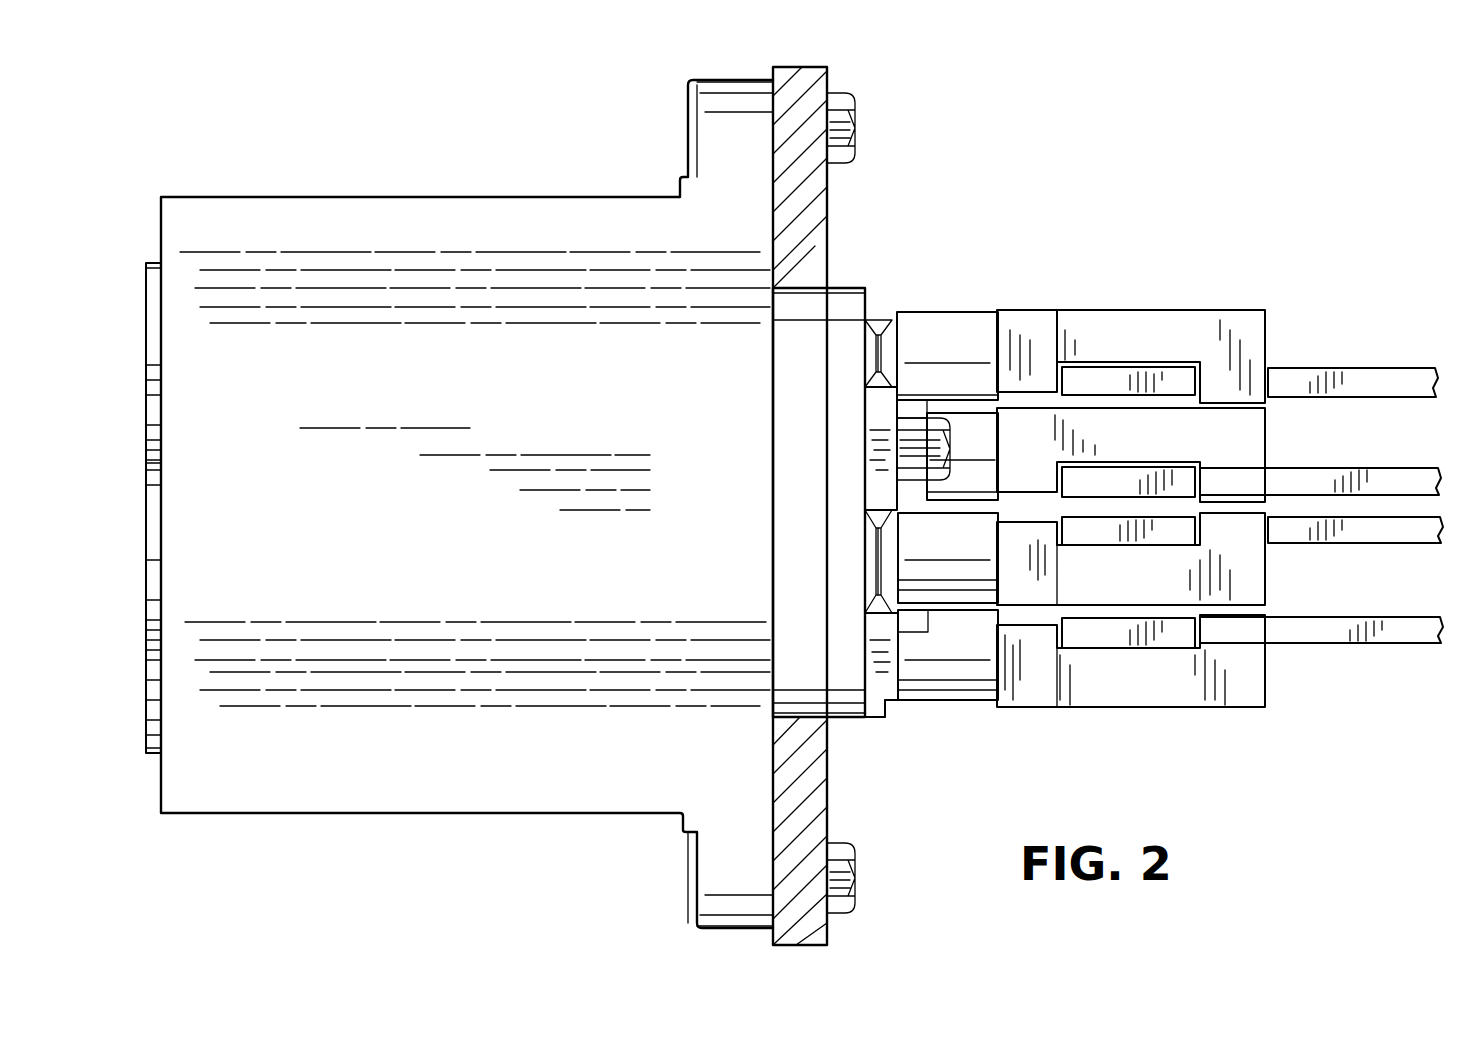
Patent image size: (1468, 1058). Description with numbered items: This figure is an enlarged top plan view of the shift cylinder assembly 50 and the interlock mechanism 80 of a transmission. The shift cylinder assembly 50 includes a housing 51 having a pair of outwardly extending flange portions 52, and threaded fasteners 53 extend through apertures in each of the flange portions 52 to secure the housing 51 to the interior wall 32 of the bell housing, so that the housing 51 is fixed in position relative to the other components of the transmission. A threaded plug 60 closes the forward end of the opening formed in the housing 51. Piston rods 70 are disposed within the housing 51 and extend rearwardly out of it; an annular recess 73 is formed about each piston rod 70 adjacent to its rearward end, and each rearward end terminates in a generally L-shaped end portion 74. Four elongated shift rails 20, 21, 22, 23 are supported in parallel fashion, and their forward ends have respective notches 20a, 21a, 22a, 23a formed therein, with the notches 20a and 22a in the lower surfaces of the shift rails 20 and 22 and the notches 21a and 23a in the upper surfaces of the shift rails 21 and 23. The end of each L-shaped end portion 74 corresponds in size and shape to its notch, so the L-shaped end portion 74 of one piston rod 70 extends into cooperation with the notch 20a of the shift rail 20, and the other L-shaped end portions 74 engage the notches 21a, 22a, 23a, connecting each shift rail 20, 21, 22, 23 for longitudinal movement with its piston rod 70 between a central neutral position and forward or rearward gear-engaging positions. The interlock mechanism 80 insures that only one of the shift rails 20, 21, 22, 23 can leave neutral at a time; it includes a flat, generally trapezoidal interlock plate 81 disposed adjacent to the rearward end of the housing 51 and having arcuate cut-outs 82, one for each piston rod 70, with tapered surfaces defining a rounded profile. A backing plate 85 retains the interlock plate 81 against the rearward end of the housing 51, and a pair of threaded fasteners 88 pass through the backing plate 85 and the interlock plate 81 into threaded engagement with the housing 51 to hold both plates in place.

The shift cylinder assembly 50 is at (397, 168).
The housing 51 is at (406, 797).
The flange portions 52 is at (705, 122).
The threaded fasteners 53 is at (860, 130).
The interior wall 32 is at (822, 190).
The threaded plug 60 is at (152, 690).
The piston rod 70 is at (975, 312).
The annular recess 73 is at (880, 320).
The L-shaped end portion 74 is at (1120, 350).
The interlock mechanism 80 is at (887, 724).
The interlock plate 81 is at (880, 462).
The arcuate cut-outs 82 is at (865, 520).
The backing plate 85 is at (910, 422).
The threaded fasteners 88 is at (945, 457).
The shift rail 20 is at (1418, 645).
The notch 20a is at (1262, 640).
The shift rail 21 is at (1388, 545).
The notch 21a is at (1268, 530).
The shift rail 22 is at (1375, 468).
The notch 22a is at (1258, 478).
The shift rail 23 is at (1388, 367).
The notch 23a is at (1265, 378).